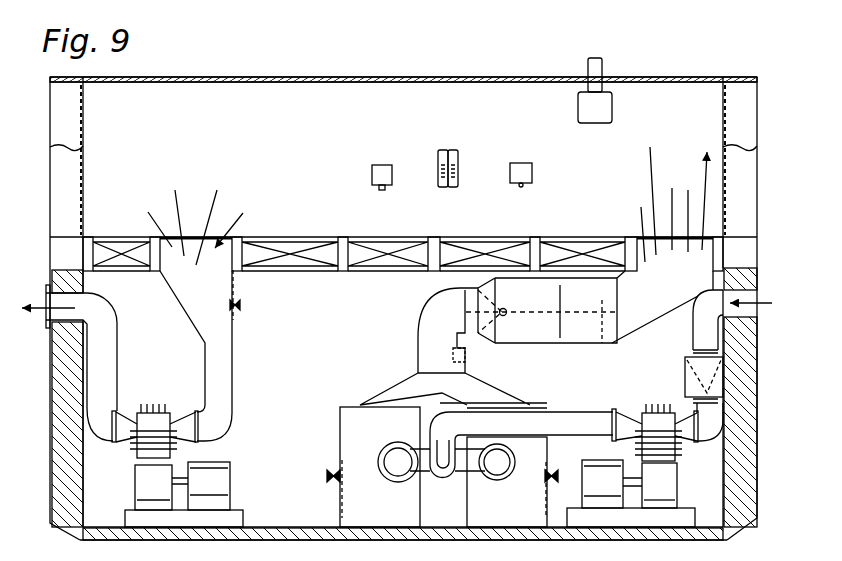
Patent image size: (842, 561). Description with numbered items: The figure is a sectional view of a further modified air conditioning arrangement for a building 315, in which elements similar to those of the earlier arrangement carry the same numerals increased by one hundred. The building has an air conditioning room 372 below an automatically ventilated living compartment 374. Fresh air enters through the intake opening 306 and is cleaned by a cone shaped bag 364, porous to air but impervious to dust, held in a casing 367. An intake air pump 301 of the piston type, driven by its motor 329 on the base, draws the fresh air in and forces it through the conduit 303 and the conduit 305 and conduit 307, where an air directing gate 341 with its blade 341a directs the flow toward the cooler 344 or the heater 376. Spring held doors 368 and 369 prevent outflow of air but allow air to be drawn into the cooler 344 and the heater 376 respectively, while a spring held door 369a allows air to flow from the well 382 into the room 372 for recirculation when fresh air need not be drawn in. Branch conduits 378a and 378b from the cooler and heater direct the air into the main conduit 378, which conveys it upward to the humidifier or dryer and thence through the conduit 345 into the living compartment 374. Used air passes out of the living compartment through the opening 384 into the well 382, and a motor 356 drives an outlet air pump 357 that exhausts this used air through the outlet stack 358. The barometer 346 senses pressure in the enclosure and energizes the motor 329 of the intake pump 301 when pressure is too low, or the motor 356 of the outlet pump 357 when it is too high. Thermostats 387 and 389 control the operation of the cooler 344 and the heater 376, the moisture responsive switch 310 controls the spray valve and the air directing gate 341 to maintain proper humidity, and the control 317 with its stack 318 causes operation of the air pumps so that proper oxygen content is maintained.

The air pump 301 is at (662, 442).
The conduit 303 is at (568, 427).
The conduit 305 is at (526, 328).
The intake opening 306 is at (748, 292).
The conduit 307 is at (570, 328).
The moisture responsive switch 310 is at (526, 174).
The building 315 is at (48, 128).
The control 317 is at (606, 112).
The stack 318 is at (598, 70).
The motor 329 is at (610, 488).
The air directing gate 341 is at (455, 291).
The damper blade 341a is at (604, 343).
The cooler 344 is at (534, 458).
The conduit 345 is at (653, 308).
The barometer 346 is at (389, 158).
The motor 356 is at (218, 472).
The air pump 357 is at (140, 485).
The outlet stack 358 is at (116, 368).
The cone shaped bag 364 is at (685, 388).
The casing 367 is at (700, 370).
The spring held door 368 is at (543, 490).
The spring held door 369 is at (345, 490).
The spring held door 369a is at (238, 312).
The room 372 is at (367, 290).
The living compartment 374 is at (328, 98).
The heater 376 is at (352, 437).
The conduit 378 is at (435, 326).
The branch conduit 378a is at (487, 394).
The branch conduit 378b is at (402, 393).
The well 382 is at (190, 303).
The opening 384 is at (213, 237).
The thermostat 387 is at (456, 162).
The thermostat 389 is at (441, 160).